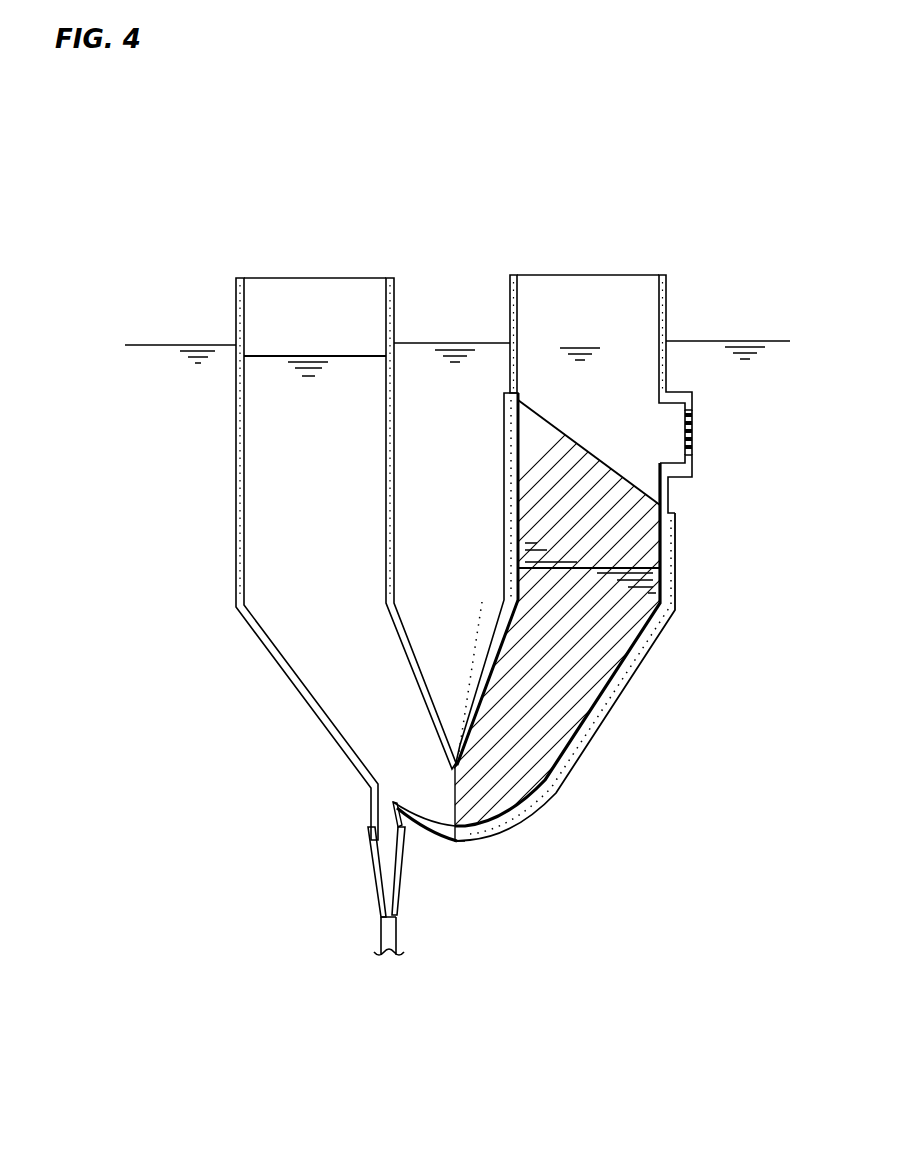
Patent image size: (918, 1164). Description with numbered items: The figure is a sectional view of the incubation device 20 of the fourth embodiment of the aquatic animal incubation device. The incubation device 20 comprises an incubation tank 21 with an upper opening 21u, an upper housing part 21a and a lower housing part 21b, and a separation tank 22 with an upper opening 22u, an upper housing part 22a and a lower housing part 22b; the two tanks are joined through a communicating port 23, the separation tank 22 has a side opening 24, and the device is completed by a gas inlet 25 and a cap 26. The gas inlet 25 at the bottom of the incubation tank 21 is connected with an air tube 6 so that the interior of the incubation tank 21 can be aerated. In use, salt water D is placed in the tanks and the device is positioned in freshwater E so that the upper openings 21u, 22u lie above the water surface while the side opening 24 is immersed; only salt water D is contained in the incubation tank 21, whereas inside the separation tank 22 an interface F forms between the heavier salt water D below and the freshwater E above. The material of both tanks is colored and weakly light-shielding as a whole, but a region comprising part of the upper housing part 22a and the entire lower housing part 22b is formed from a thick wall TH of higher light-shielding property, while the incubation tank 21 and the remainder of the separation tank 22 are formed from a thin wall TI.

The incubation device 20 is at (466, 173).
The incubation tank 21 is at (302, 521).
The upper opening 21u is at (386, 288).
The upper housing part 21a is at (237, 490).
The lower housing part 21b is at (298, 690).
The separation tank 22 is at (591, 560).
The upper opening 22u is at (659, 283).
The upper housing part 22a is at (508, 465).
The lower housing part 22b is at (598, 718).
The communicating port 23 is at (466, 815).
The side opening 24 is at (670, 460).
The gas inlet 25 is at (367, 815).
The cap 26 is at (682, 392).
The air tube 6 is at (380, 932).
The salt water D is at (325, 530).
The freshwater E is at (605, 418).
The interface F is at (632, 567).
The thick wall TH is at (573, 753).
The thin wall TI is at (322, 723).